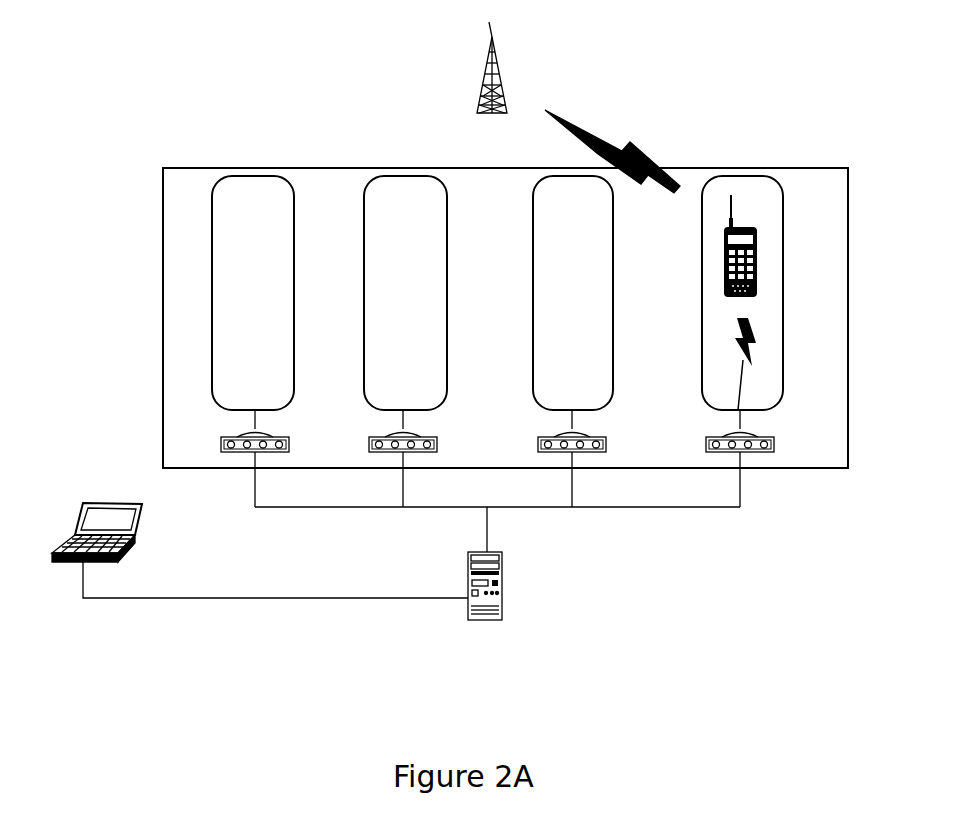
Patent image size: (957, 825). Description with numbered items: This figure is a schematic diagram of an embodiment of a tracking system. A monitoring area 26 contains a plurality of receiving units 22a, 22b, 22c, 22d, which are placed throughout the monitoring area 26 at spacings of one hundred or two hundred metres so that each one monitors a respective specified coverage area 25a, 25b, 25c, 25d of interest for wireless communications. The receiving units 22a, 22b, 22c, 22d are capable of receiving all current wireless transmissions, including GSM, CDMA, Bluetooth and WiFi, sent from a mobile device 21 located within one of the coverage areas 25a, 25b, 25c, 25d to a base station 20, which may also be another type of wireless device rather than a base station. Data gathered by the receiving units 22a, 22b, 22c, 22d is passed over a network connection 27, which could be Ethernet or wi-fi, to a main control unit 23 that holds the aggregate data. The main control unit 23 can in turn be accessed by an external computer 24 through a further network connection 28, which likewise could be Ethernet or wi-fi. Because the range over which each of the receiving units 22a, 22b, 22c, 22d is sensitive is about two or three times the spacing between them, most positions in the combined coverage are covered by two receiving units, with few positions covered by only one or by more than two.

The base station 20 is at (487, 60).
The mobile device 21 is at (702, 267).
The receiving unit 22a is at (270, 452).
The receiving unit 22b is at (415, 452).
The receiving unit 22c is at (585, 452).
The receiving unit 22d is at (753, 452).
The main control unit 23 is at (503, 580).
The external computer 24 is at (140, 535).
The coverage area 25a is at (222, 180).
The coverage area 25b is at (378, 178).
The coverage area 25c is at (533, 185).
The coverage area 25d is at (770, 175).
The monitoring area 26 is at (163, 302).
The network connection 27 is at (695, 507).
The further network connection 28 is at (342, 598).